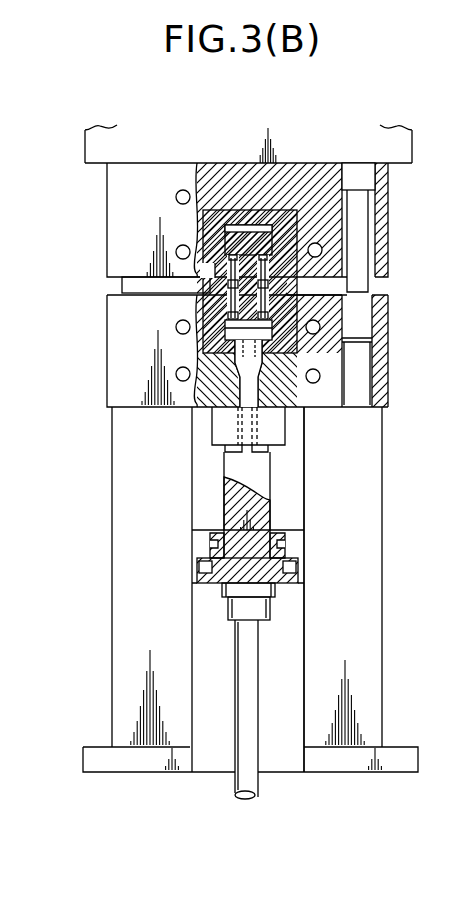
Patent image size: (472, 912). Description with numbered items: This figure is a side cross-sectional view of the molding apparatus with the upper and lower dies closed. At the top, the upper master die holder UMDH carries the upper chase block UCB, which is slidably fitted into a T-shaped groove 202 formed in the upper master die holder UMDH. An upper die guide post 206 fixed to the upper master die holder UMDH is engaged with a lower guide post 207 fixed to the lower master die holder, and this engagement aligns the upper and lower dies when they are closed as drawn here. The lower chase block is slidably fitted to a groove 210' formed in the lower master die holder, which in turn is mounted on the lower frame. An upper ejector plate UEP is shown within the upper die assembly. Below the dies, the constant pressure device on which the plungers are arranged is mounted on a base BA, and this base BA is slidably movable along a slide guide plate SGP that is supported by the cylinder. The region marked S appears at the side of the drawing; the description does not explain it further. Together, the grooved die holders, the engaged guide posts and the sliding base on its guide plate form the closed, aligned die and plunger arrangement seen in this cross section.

The T-shaped groove 202 is at (205, 222).
The upper die guide post 206 is at (358, 224).
The lower guide post 207 is at (362, 378).
The groove 210' is at (320, 342).
The upper master die holder UMDH is at (241, 163).
The upper chase block UCB is at (283, 210).
The upper ejector plate UEP is at (210, 284).
The base BA is at (217, 542).
The slide guide plate SGP is at (203, 570).
The molding station S is at (388, 589).